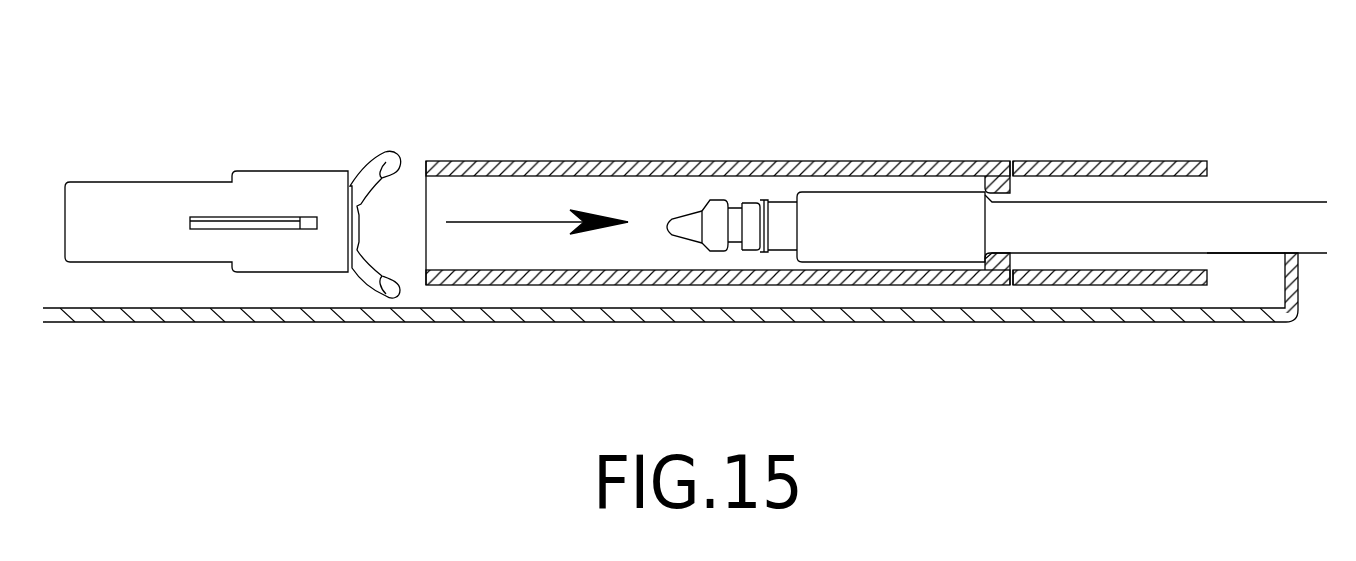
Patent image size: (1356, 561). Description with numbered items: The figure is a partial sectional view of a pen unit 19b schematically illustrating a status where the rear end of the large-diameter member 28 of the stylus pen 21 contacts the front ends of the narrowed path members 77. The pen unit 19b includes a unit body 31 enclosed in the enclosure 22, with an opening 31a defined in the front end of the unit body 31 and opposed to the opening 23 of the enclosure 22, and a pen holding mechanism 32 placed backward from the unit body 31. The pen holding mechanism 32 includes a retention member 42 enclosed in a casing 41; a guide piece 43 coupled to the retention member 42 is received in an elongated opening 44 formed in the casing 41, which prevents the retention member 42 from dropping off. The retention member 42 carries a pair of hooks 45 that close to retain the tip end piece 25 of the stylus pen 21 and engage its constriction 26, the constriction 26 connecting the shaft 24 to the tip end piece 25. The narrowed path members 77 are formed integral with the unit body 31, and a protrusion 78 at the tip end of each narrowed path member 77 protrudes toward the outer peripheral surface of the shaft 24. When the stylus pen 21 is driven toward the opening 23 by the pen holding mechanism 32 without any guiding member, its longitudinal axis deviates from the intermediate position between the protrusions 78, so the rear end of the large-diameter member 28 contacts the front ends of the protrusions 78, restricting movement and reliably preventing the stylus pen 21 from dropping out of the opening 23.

The pen unit 19b is at (876, 195).
The stylus pen 21 is at (1263, 188).
The enclosure 22 is at (698, 320).
The opening 23 is at (1295, 262).
The shaft 24 is at (1224, 254).
The tip end piece 25 is at (712, 200).
The constriction 26 is at (735, 208).
The large-diameter member 28 is at (830, 192).
The unit body 31 is at (819, 237).
The opening 31a is at (1210, 167).
The pen holding mechanism 32 is at (242, 239).
The casing 41 is at (290, 171).
The retention member 42 is at (385, 242).
The guide piece 43 is at (298, 226).
The elongated opening 44 is at (200, 227).
The hooks 45 is at (403, 139).
The narrowed path members 77 is at (958, 161).
The protrusion 78 is at (1013, 173).